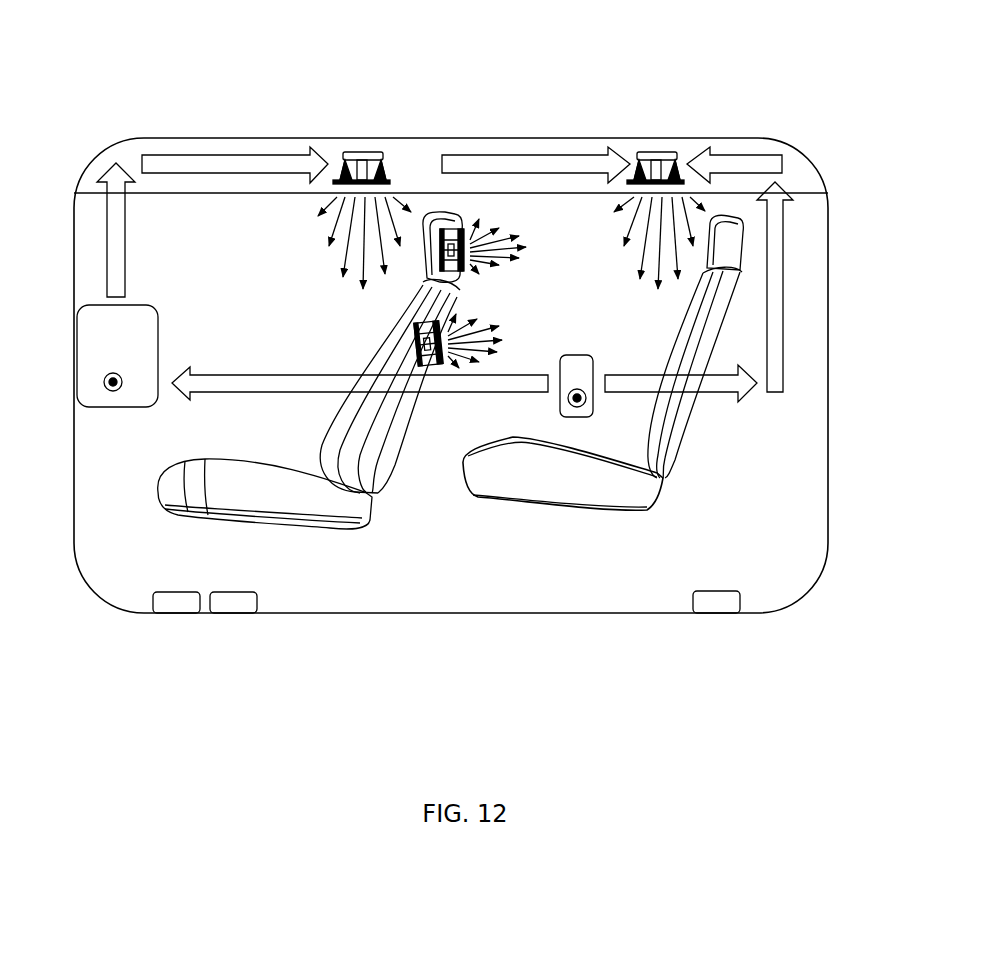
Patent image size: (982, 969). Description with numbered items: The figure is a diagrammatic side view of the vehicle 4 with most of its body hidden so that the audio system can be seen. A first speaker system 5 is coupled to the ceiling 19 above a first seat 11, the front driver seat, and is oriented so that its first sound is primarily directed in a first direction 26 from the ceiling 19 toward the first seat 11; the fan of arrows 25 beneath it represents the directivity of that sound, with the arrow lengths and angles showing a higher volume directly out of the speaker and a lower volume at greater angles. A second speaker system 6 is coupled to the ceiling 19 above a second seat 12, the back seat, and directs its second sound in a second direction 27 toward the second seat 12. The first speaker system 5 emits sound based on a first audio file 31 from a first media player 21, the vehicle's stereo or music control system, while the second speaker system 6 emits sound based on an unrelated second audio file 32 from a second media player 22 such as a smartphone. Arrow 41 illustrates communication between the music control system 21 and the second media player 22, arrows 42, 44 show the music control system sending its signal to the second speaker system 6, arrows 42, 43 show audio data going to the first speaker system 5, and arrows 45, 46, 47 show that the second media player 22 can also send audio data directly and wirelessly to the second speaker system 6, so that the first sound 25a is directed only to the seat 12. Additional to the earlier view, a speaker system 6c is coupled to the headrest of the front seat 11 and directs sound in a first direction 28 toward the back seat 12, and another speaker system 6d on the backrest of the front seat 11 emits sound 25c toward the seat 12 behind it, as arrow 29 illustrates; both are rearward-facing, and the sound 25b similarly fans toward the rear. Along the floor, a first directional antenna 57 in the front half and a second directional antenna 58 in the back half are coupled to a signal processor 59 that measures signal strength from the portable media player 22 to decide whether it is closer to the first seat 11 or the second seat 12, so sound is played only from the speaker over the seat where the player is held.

The vehicle 4 is at (476, 70).
The first speaker system 5 is at (372, 150).
The second speaker system 6 is at (653, 150).
The speaker system 6c is at (467, 228).
The speaker system 6d is at (431, 362).
The first seat 11 is at (320, 544).
The second seat 12 is at (593, 521).
The ceiling 19 is at (196, 199).
The first media player 21 is at (158, 318).
The second media player 22 is at (582, 354).
The arrows 25 is at (317, 261).
The first sound 25a is at (610, 254).
The sound output direction 25b is at (531, 240).
The sound 25c is at (504, 324).
The first direction 26 is at (366, 272).
The second direction 27 is at (643, 277).
The first direction 28 is at (514, 249).
The arrow 29 is at (505, 346).
The first audio file 31 is at (117, 391).
The second audio file 32 is at (584, 406).
The arrow 41 is at (205, 371).
The arrow 42 is at (128, 264).
The arrow 43 is at (230, 150).
The arrow 44 is at (527, 150).
The arrow 45 is at (722, 396).
The arrow 46 is at (783, 302).
The arrow 47 is at (737, 150).
The first directional antenna 57 is at (178, 591).
The second directional antenna 58 is at (714, 590).
The signal processor 59 is at (232, 591).